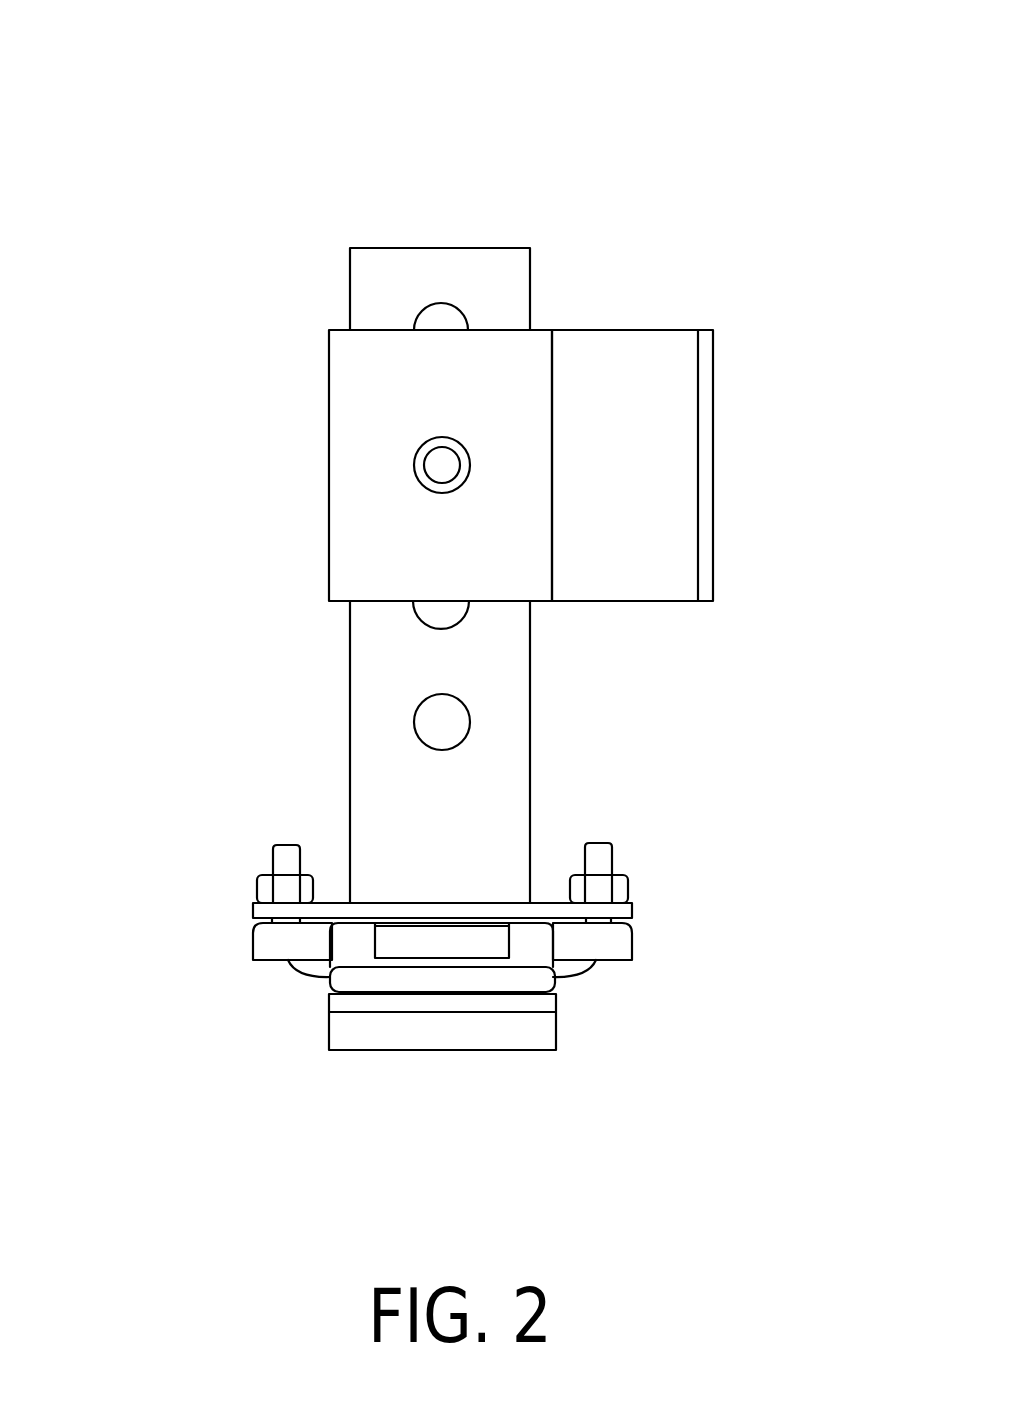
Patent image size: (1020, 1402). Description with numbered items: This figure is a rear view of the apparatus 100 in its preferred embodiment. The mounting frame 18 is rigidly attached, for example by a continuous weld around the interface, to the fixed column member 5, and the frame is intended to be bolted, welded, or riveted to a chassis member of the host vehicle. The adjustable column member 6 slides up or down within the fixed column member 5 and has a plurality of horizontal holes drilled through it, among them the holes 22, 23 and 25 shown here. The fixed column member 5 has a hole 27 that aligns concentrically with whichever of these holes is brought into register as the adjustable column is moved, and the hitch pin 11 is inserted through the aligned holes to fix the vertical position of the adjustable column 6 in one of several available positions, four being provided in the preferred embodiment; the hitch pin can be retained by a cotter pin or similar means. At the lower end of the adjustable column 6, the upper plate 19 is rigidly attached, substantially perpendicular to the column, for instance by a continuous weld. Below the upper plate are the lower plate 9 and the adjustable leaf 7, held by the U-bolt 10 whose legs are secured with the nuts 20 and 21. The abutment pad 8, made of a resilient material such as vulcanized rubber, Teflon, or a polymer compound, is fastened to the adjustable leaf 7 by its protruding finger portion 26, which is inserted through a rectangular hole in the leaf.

The apparatus 100 is at (378, 162).
The fixed column member 5 is at (382, 370).
The adjustable column member 6 is at (385, 667).
The adjustable leaf 7 is at (372, 978).
The abutment pad 8 is at (368, 1033).
The lower plate 9 is at (603, 937).
The U-bolt 10 is at (603, 858).
The hitch pin 11 is at (440, 464).
The mounting frame 18 is at (643, 390).
The upper plate 19 is at (610, 910).
The nut 20 is at (283, 888).
The nut 21 is at (598, 888).
The horizontal hole 22 is at (443, 723).
The horizontal hole 23 is at (438, 608).
The horizontal hole 25 is at (442, 319).
The protruding finger portion 26 is at (373, 937).
The hole 27 is at (460, 443).